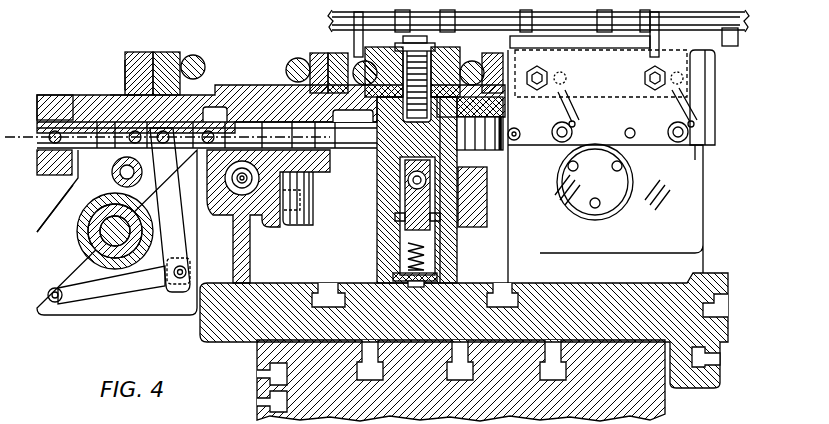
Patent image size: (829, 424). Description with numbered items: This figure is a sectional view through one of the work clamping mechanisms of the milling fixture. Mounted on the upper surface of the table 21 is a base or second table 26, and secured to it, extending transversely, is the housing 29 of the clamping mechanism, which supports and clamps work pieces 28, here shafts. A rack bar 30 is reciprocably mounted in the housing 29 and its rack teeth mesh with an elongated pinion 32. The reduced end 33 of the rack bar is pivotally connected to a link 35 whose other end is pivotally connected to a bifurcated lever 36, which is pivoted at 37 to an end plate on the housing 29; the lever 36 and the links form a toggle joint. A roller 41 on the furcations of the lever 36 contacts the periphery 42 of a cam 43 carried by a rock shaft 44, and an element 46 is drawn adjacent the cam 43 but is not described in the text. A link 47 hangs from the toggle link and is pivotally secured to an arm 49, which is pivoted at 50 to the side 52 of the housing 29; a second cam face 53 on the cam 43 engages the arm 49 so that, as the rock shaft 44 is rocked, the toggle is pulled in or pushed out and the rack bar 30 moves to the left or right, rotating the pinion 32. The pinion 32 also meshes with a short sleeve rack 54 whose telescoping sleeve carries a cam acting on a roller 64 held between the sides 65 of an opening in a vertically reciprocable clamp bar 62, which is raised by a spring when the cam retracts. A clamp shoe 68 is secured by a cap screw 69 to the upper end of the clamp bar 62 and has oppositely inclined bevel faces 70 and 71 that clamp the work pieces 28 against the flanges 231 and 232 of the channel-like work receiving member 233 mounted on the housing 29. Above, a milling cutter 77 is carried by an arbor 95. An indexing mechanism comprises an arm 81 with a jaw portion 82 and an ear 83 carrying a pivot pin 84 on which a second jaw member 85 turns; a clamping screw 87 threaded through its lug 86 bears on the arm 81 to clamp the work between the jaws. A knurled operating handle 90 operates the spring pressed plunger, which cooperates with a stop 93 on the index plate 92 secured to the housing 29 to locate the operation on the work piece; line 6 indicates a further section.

The table 21 is at (665, 404).
The second table 26 is at (707, 300).
The work piece 28 is at (200, 58).
The housing 29 is at (703, 160).
The rack bar 30 is at (377, 185).
The elongated pinion 32 is at (296, 212).
The reduced end of rack bar 33 is at (220, 85).
The link 35 is at (125, 85).
The bifurcated lever 36 is at (125, 97).
The pivot 37 is at (72, 97).
The roller 41 is at (112, 174).
The cam periphery 42 is at (100, 245).
The cam 43 is at (88, 240).
The rock shaft 44 is at (125, 280).
The ring 46 is at (80, 222).
The link 47 is at (180, 180).
The arm 49 is at (172, 283).
The pivot 50 is at (58, 302).
The side of housing 52 is at (110, 315).
The second cam face 53 is at (40, 238).
The sleeve rack 54 is at (252, 225).
The section line 6 is at (31, 154).
The clamp bar 62 is at (440, 262).
The roller 64 is at (400, 233).
The side of opening 65 is at (405, 215).
The clamp shoe 68 is at (430, 52).
The cap screw 69 is at (400, 46).
The bevel face 70 is at (490, 47).
The bevel face 71 is at (358, 50).
The milling cutter 77 is at (660, 45).
The arm 81 is at (572, 130).
The jaw portion 82 is at (550, 48).
The ear 83 is at (548, 76).
The pivot pin 84 is at (566, 80).
The second jaw member 85 is at (644, 80).
The lug 86 is at (580, 118).
The clamping screw 87 is at (575, 132).
The knurled operating handle 90 is at (562, 158).
The index plate 92 is at (692, 152).
The stop 93 is at (520, 120).
The arbor 95 is at (740, 22).
The flange 231 is at (175, 45).
The flange 232 is at (310, 37).
The work receiving member 233 is at (335, 165).